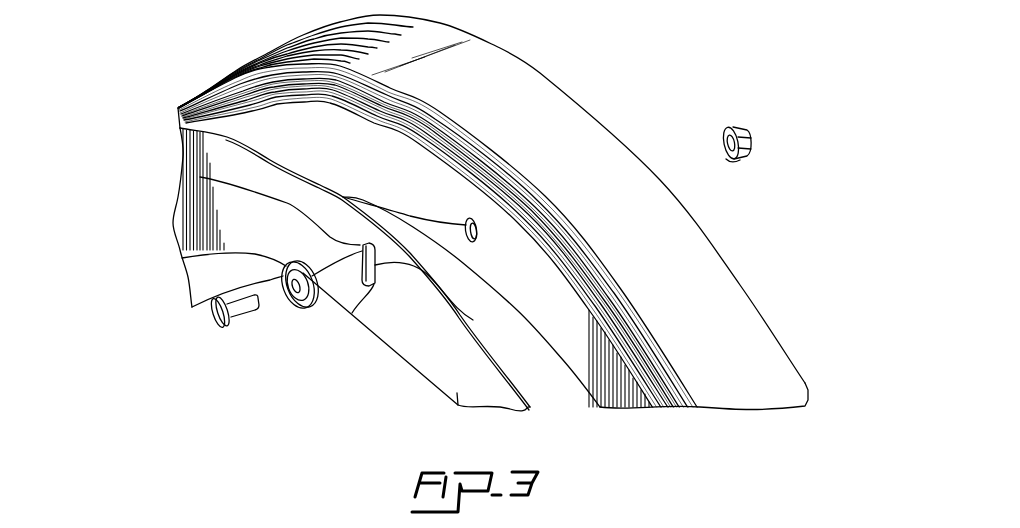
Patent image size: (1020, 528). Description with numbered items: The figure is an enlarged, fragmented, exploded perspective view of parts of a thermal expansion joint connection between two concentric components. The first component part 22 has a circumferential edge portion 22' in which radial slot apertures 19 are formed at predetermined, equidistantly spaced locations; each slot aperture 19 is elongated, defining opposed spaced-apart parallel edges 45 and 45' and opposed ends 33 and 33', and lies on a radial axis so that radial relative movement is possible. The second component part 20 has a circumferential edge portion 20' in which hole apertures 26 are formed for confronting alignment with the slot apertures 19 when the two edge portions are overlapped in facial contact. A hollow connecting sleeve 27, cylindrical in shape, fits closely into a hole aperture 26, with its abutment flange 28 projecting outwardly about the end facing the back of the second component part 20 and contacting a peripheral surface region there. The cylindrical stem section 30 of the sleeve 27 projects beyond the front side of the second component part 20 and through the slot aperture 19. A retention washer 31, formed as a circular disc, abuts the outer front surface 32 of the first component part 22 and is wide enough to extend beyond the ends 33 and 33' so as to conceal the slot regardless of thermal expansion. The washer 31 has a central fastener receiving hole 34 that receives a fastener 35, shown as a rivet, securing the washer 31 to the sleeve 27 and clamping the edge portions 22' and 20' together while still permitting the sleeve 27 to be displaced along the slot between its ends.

The radial slot apertures 19 is at (449, 297).
The second component part 20 is at (499, 257).
The circumferential edge portion of the second component part 20' is at (496, 302).
The first component part 22 is at (380, 347).
The circumferential edge portion of the first component part 22' is at (495, 428).
The hole apertures 26 is at (479, 233).
The hollow connecting sleeve 27 is at (741, 131).
The abutment flange 28 is at (752, 156).
The cylindrical stem section 30 is at (724, 134).
The retention washer 31 is at (292, 308).
The outer front surface 32 is at (396, 312).
The end of the slot aperture 33 is at (250, 217).
The end of the slot aperture 33' is at (348, 323).
The central fastener receiving hole 34 is at (290, 298).
The fastener 35 is at (255, 290).
The elongated parallel edge 45 is at (441, 299).
The elongated parallel edge 45' is at (336, 290).